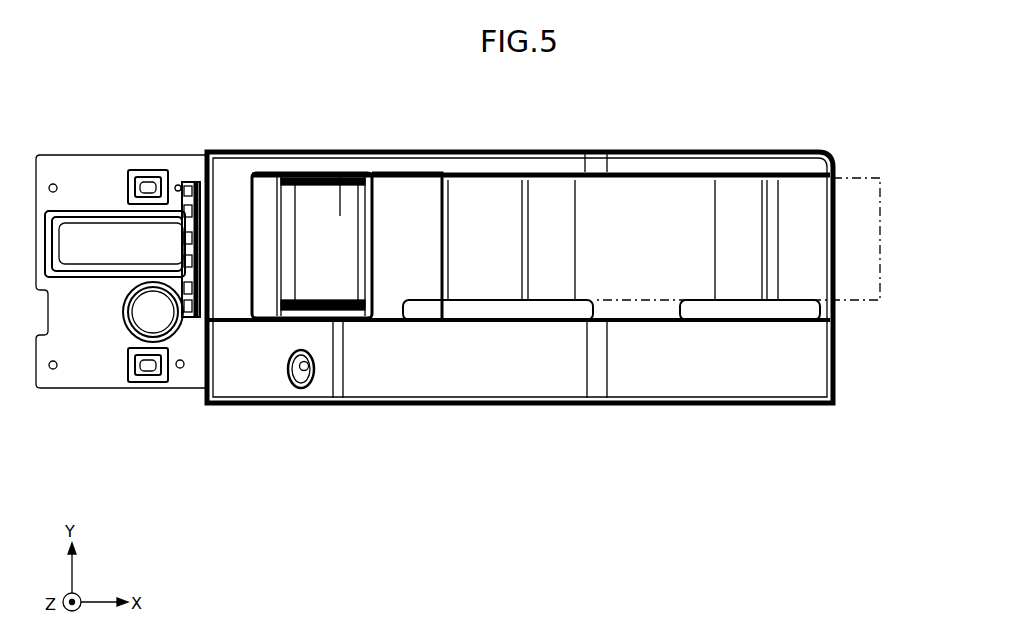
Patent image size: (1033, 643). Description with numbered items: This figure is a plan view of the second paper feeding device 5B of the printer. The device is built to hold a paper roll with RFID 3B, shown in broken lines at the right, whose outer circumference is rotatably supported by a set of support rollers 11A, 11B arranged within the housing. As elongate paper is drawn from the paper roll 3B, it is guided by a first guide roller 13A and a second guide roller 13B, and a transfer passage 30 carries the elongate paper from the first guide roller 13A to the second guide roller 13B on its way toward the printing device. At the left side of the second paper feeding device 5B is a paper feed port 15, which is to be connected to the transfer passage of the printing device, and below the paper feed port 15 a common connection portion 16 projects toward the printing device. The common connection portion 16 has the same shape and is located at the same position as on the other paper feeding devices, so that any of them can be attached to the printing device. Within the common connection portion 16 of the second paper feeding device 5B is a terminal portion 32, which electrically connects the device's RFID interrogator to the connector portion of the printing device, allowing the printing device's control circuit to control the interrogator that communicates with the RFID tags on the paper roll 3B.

The second paper feeding device 5B is at (596, 440).
The second guide roller 13B is at (289, 237).
The transfer passage 30 is at (340, 216).
The first guide roller 13A is at (393, 205).
The support roller 11A is at (535, 232).
The support roller 11B is at (752, 232).
The paper roll with RFID 3B is at (880, 220).
The common connection portion 16 is at (97, 375).
The terminal portion 32 is at (83, 240).
The paper feed port 15 is at (187, 168).